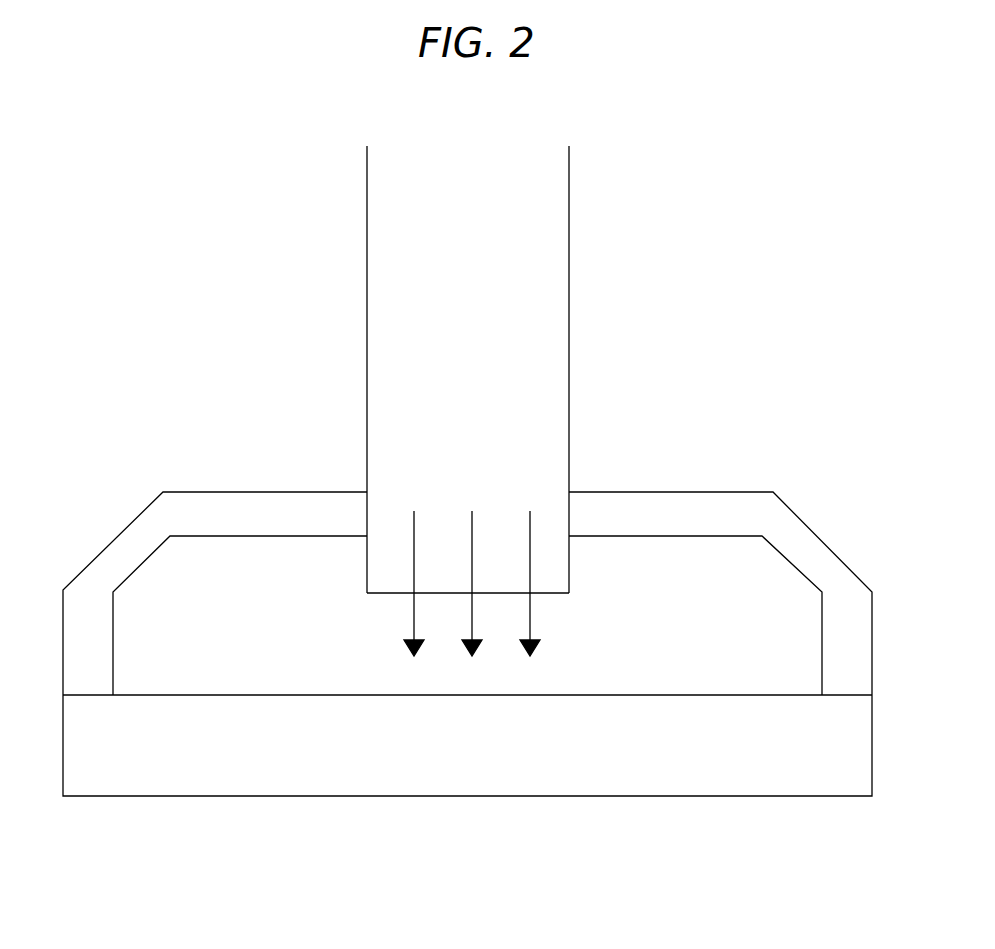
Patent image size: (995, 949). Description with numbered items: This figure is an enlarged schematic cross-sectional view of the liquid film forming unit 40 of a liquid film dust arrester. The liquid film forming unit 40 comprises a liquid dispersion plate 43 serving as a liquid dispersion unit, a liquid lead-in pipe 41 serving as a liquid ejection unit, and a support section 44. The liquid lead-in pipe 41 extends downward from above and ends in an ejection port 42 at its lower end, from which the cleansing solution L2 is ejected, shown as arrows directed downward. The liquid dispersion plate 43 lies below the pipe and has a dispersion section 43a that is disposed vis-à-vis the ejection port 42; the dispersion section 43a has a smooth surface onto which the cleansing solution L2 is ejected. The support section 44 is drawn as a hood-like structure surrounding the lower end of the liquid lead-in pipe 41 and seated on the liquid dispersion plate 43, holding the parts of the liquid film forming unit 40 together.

The liquid film forming unit 40 is at (820, 441).
The liquid lead-in pipe 41 is at (542, 263).
The ejection port 42 is at (373, 596).
The liquid dispersion plate 43 is at (825, 778).
The dispersion section 43a is at (688, 695).
The support section 44 is at (105, 570).
The cleansing solution L2 is at (533, 627).